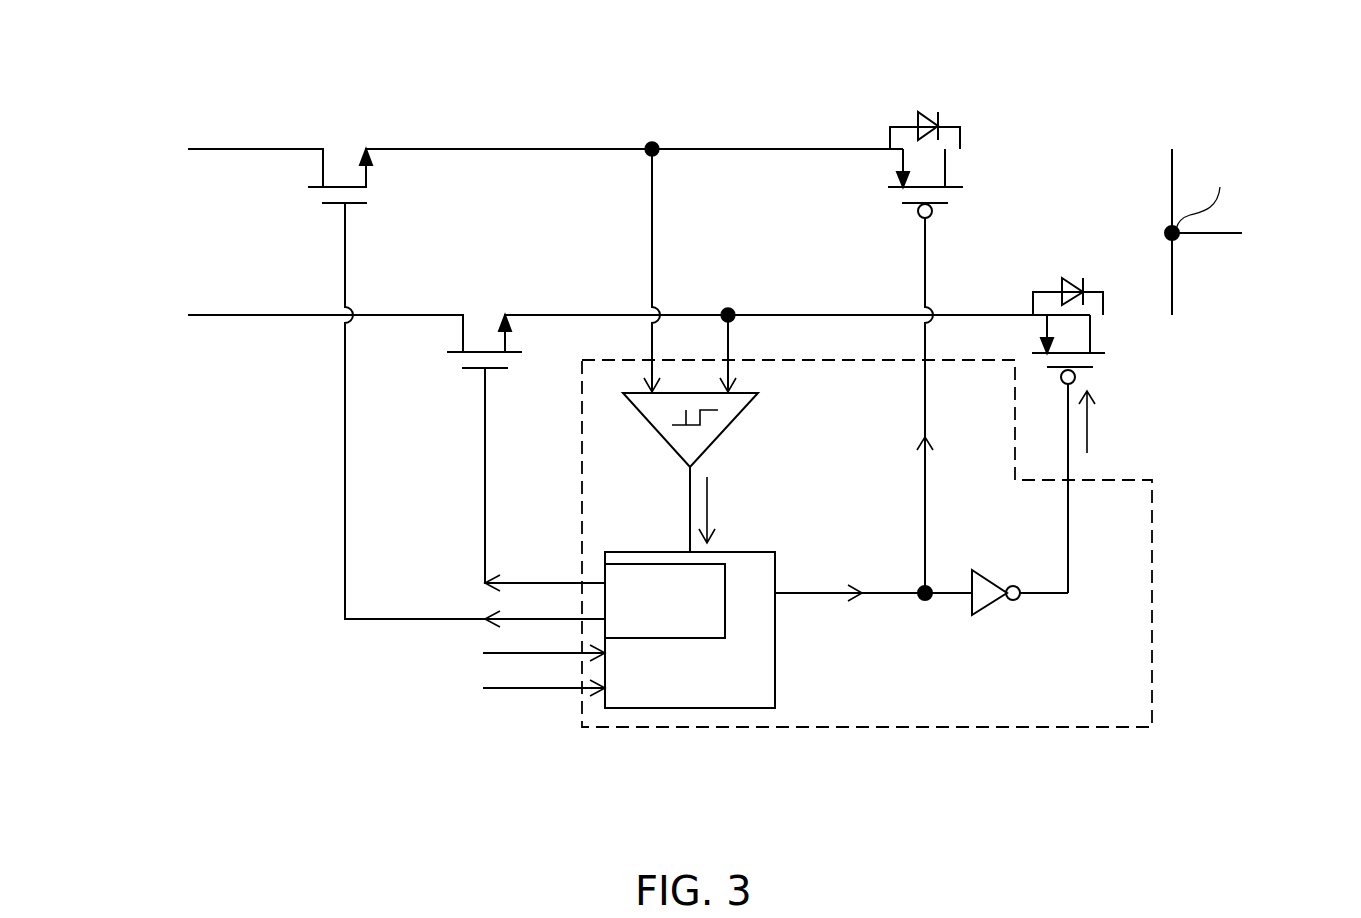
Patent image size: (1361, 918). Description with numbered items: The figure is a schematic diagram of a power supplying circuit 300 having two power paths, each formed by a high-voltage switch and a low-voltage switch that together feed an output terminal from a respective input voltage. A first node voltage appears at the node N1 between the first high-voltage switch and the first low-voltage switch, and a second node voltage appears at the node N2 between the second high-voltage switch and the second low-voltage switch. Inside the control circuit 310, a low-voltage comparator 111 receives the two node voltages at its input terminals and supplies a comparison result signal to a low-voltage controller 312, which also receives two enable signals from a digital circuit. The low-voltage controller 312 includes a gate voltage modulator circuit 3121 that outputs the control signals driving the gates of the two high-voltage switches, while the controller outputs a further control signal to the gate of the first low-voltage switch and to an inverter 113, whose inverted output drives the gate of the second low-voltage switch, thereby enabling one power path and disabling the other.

The power supplying circuit 300 is at (95, 44).
The control circuit 310 is at (1153, 567).
The low-voltage comparator 111 is at (723, 435).
The inverter 113 is at (990, 605).
The low-voltage controller 312 is at (690, 630).
The gate voltage modulator circuit 3121 is at (698, 614).
The node N1 is at (661, 146).
The node N2 is at (737, 312).